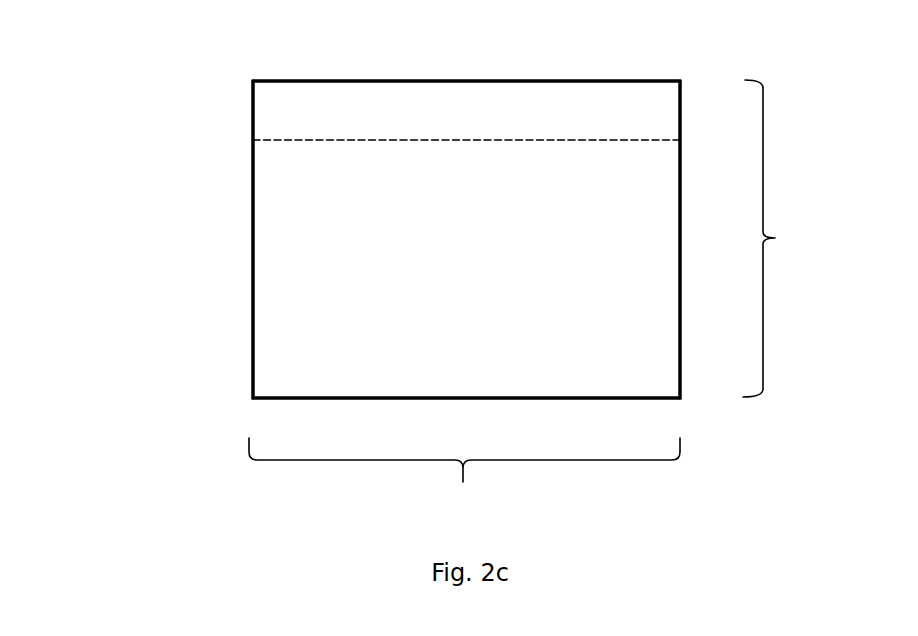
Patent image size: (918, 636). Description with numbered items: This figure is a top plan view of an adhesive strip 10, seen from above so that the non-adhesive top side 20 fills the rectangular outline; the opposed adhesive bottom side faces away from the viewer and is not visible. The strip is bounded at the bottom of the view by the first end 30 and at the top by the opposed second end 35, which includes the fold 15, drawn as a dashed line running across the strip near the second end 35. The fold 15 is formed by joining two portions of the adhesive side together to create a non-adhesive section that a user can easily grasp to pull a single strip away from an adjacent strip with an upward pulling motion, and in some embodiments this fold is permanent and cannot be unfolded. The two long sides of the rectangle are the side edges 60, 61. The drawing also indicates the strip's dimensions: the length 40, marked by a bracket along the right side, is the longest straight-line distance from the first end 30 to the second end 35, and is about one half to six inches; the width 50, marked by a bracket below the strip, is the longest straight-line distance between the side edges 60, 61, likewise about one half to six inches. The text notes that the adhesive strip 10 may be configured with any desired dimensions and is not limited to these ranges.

The adhesive strip 10 is at (126, 106).
The fold 15 is at (385, 108).
The non-adhesive top side 20 is at (448, 262).
The first end 30 is at (283, 398).
The second end 35 is at (568, 82).
The length 40 is at (781, 238).
The width 50 is at (464, 480).
The side edge 60 is at (253, 217).
The side edge 61 is at (682, 170).